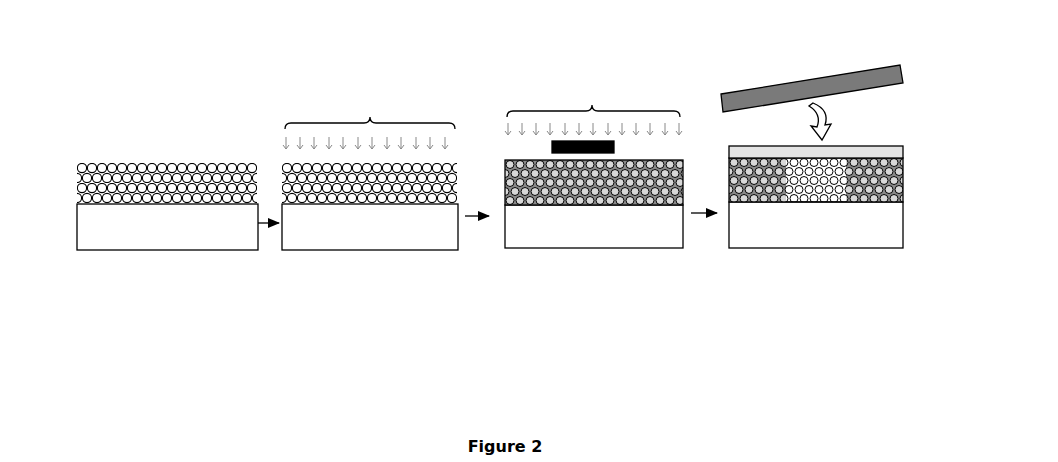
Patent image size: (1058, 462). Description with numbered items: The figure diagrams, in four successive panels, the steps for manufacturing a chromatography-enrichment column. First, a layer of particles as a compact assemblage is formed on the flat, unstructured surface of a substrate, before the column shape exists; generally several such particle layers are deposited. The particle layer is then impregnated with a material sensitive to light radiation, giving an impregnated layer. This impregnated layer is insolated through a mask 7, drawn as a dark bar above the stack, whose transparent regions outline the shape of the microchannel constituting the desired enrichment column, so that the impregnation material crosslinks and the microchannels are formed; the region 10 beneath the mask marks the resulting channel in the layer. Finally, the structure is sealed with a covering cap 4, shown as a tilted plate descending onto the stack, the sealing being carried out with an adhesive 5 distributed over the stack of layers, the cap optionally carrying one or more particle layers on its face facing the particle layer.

The covering cap 4 is at (836, 82).
The adhesive 5 is at (878, 149).
The mask 7 is at (626, 147).
The patterned region 10 is at (817, 180).